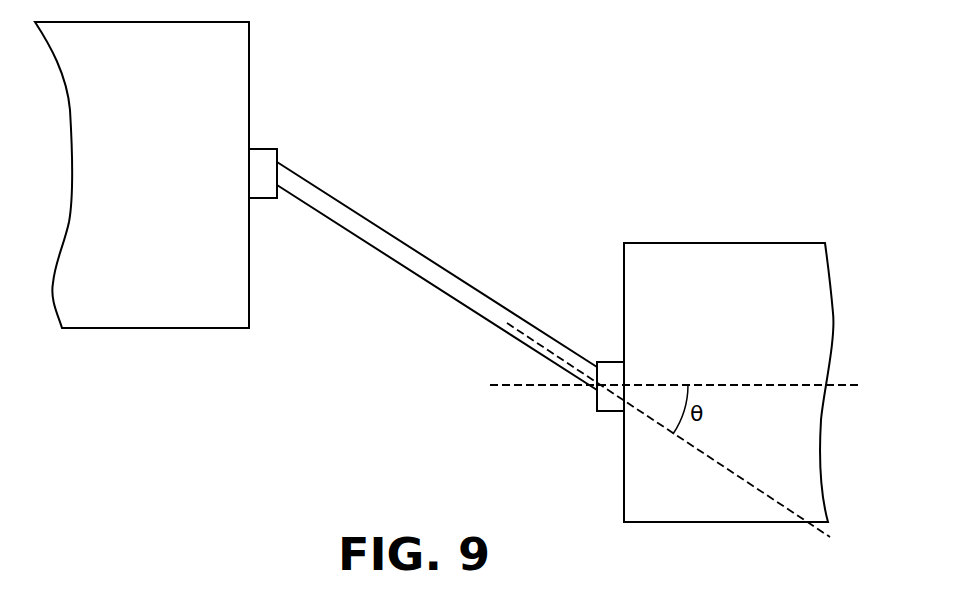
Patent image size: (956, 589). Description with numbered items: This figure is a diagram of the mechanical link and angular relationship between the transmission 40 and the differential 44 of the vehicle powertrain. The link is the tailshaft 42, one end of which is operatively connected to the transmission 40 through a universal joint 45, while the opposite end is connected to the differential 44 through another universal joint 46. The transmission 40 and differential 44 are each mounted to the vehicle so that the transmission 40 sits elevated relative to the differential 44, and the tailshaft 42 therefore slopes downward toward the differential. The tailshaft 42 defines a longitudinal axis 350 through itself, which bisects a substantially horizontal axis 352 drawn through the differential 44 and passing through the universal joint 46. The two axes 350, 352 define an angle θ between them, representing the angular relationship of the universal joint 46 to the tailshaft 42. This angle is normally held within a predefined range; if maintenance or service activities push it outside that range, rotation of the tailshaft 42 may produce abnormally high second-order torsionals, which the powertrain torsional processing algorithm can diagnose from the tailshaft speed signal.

The transmission 40 is at (250, 65).
The universal joint 45 is at (267, 149).
The tailshaft 42 is at (427, 258).
The differential 44 is at (675, 243).
The universal joint 46 is at (610, 362).
The horizontal axis 352 is at (508, 388).
The longitudinal axis 350 is at (705, 455).